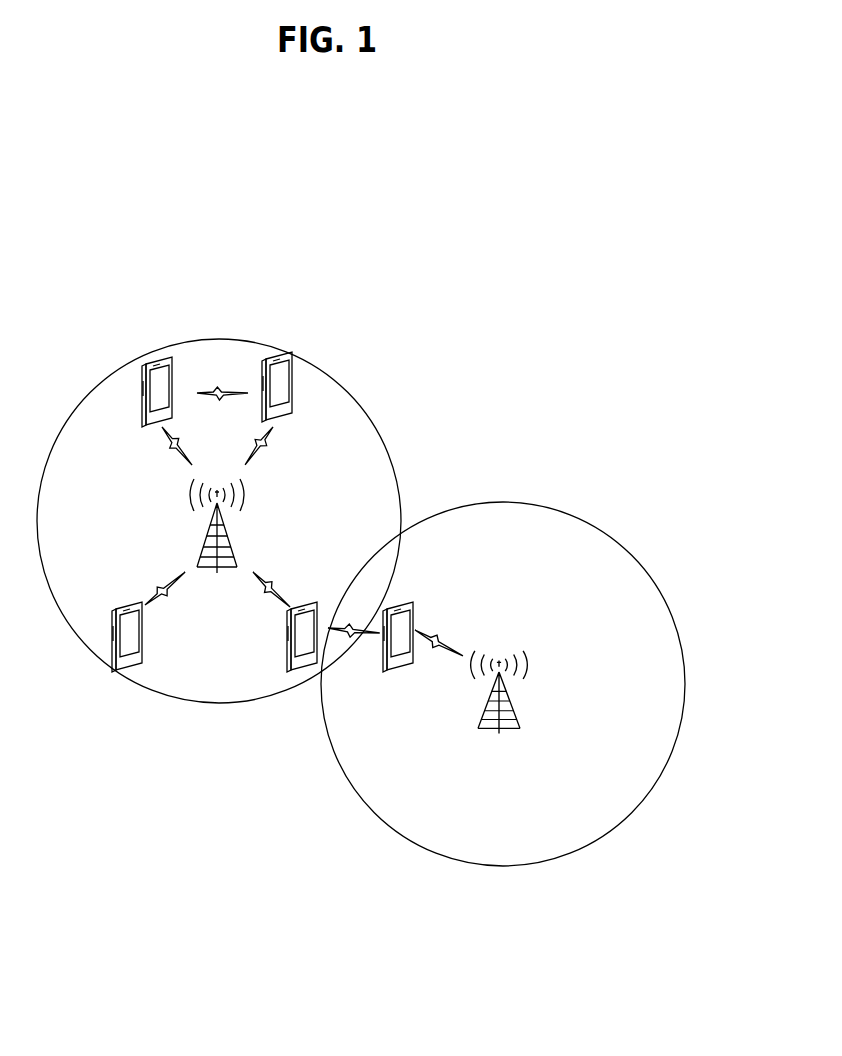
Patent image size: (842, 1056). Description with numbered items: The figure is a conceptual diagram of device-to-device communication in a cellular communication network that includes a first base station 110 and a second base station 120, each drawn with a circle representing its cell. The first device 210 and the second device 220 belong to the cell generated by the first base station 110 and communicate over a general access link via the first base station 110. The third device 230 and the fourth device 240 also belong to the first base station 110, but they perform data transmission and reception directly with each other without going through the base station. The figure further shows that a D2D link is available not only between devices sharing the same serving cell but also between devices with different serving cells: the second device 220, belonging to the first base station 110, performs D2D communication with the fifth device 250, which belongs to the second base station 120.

The first base station 110 is at (207, 543).
The second base station 120 is at (499, 660).
The device 1 210 is at (126, 672).
The device 2 220 is at (305, 602).
The device 3 230 is at (156, 358).
The device 4 240 is at (276, 354).
The device 5 250 is at (406, 603).